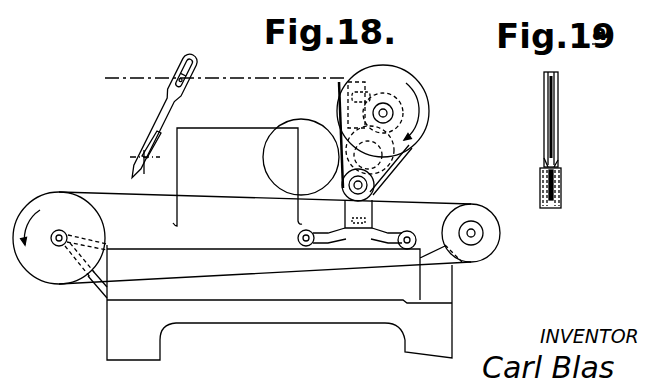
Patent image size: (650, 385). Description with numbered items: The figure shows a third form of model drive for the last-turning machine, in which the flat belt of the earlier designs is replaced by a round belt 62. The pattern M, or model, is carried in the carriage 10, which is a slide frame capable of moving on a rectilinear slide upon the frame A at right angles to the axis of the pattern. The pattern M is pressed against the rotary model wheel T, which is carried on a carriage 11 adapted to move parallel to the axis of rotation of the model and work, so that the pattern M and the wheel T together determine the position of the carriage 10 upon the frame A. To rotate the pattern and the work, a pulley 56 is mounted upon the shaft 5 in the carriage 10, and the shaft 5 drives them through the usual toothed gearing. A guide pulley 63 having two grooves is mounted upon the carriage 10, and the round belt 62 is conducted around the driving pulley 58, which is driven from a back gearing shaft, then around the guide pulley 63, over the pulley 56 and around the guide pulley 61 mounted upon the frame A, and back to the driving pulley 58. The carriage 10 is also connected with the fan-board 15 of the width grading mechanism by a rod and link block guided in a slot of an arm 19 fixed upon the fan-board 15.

In FIG. 18, the arm 19 is at (173, 113).
In FIG. 18, the fan-board 15 is at (130, 164).
In FIG. 18, the carriage 11 is at (237, 177).
In FIG. 18, the model wheel T is at (320, 122).
In FIG. 18, the pulley 56 is at (398, 82).
In FIG. 19A, the pulley 56 is at (558, 94).
In FIG. 18, the shaft 5 is at (392, 111).
In FIG. 18, the pattern M is at (398, 152).
In FIG. 18, the guide pulley 63 is at (376, 194).
In FIG. 19A, the guide pulley 63 is at (540, 184).
In FIG. 18, the driving pulley 58 is at (56, 197).
In FIG. 18, the guide pulley 61 is at (490, 233).
In FIG. 18, the round belt 62 is at (244, 201).
In FIG. 19A, the round belt 62 is at (553, 137).
In FIG. 18, the carriage 10 is at (374, 210).
In FIG. 18, the frame A is at (453, 335).